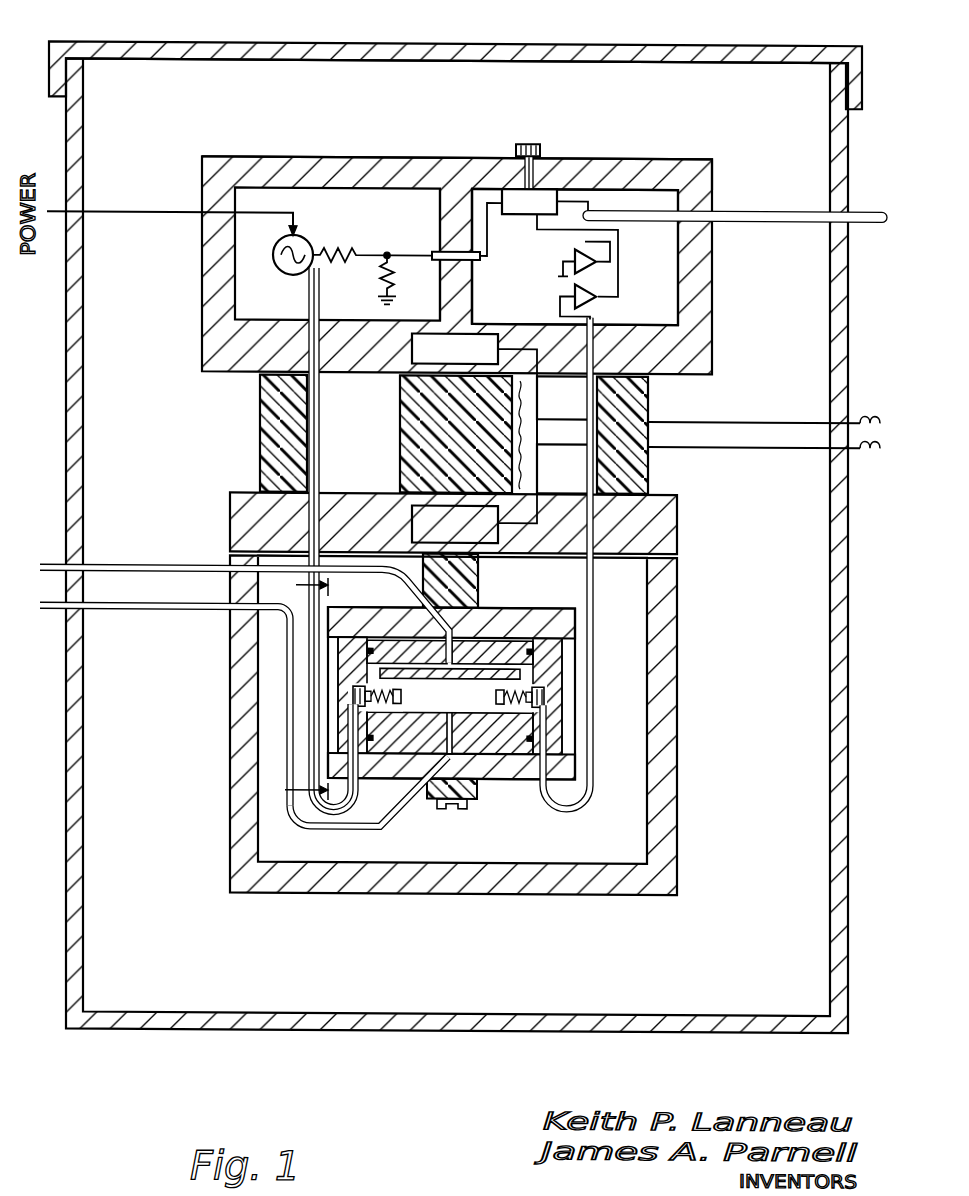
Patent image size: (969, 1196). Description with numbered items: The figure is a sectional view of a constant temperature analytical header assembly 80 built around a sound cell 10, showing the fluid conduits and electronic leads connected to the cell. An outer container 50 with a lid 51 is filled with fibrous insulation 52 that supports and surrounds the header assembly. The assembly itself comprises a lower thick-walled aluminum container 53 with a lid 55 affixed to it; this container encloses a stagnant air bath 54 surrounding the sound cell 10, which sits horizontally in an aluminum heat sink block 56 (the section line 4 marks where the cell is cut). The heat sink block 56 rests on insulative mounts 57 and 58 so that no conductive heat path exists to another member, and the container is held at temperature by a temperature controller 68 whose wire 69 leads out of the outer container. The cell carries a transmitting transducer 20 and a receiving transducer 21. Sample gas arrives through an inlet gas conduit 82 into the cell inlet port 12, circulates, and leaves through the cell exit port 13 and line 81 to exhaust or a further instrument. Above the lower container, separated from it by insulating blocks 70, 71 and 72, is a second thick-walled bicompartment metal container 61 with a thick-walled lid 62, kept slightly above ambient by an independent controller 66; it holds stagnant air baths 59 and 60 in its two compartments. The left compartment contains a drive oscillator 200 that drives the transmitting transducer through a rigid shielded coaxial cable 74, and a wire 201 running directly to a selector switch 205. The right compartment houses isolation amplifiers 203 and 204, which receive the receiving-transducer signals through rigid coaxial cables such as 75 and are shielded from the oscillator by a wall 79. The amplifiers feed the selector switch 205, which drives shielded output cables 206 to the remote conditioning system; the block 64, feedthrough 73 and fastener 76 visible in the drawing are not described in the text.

The section line 4- 4 is at (299, 688).
The sound cell 10 is at (453, 710).
The cell inlet port 12 is at (453, 735).
The cell exit port 13 is at (447, 648).
The transmitting transducer 20 is at (402, 696).
The receiving transducer 21 is at (495, 696).
The outer container 50 is at (445, 542).
The lid 51 is at (103, 43).
The fibrous insulation 52 is at (167, 963).
The lower thick-walled metal container 53 is at (418, 858).
The stagnant air bath 54 is at (453, 725).
The lid 55 is at (596, 556).
The aluminum heat sink block 56 is at (556, 608).
The insulative mount 57 is at (460, 580).
The insulative mount 58 is at (472, 802).
The stagnant air bath 59 is at (271, 293).
The stagnant air bath 60 is at (500, 300).
The second thick wall bicompartment metal container 61 is at (205, 333).
The thick-walled lid 62 is at (245, 165).
The detector wiring 64 is at (600, 255).
The controller 66 is at (466, 357).
The temperature controller 68 is at (466, 531).
The wire 69 is at (540, 488).
The insulating block 70 is at (260, 405).
The insulating block 71 is at (420, 400).
The insulating block 72 is at (648, 468).
The feedthrough 73 is at (432, 251).
The cable 74 is at (322, 435).
The rigid coaxial cable 75 is at (538, 432).
The screw 76 is at (531, 143).
The wall 79 is at (445, 204).
The analytical header assembly 80 is at (680, 552).
The line 81 is at (45, 566).
The inlet gas conduit 82 is at (52, 610).
The drive oscillator 200 is at (372, 243).
The wire 201 is at (365, 245).
The isolation amplifier 203 is at (600, 296).
The isolation amplifier 204 is at (600, 262).
The selector switch 205 is at (512, 214).
The output cable 206 is at (868, 209).